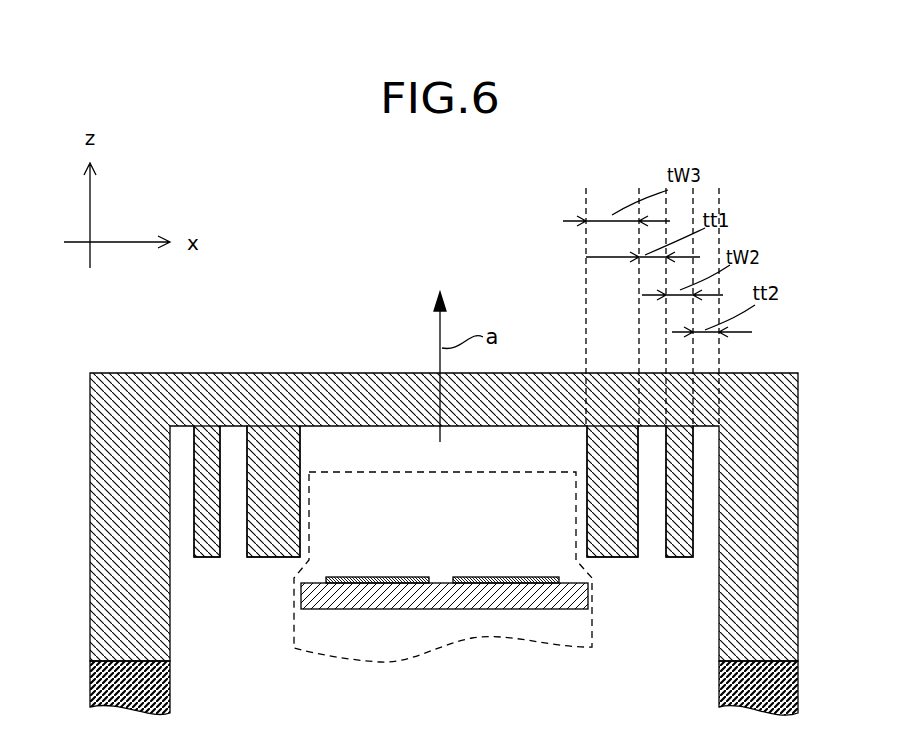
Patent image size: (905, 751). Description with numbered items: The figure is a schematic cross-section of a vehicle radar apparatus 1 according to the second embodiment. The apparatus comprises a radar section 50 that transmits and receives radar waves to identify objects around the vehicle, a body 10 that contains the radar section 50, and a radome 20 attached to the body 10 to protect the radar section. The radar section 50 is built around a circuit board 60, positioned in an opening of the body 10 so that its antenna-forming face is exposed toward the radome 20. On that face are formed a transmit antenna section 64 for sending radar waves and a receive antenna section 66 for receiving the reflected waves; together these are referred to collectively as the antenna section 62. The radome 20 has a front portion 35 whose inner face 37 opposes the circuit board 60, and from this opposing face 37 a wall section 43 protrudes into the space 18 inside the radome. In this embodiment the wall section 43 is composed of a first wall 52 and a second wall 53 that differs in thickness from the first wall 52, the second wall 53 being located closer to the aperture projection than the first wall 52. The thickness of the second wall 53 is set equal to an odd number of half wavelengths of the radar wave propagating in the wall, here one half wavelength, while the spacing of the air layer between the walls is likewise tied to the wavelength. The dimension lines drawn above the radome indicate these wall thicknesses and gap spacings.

The radar apparatus 1 is at (311, 266).
The body 10 is at (90, 690).
The space inside the radome 18 is at (545, 440).
The radome 20 is at (115, 372).
The front portion 35 is at (390, 388).
The face 37 is at (340, 428).
The wall section 43 is at (444, 565).
The radar section 50 is at (467, 638).
The first wall 52 is at (208, 557).
The second wall 53 is at (253, 557).
The circuit board 60 is at (433, 610).
The antenna section 62 is at (442, 542).
The transmit antenna section 64 is at (365, 578).
The receive antenna section 66 is at (506, 559).